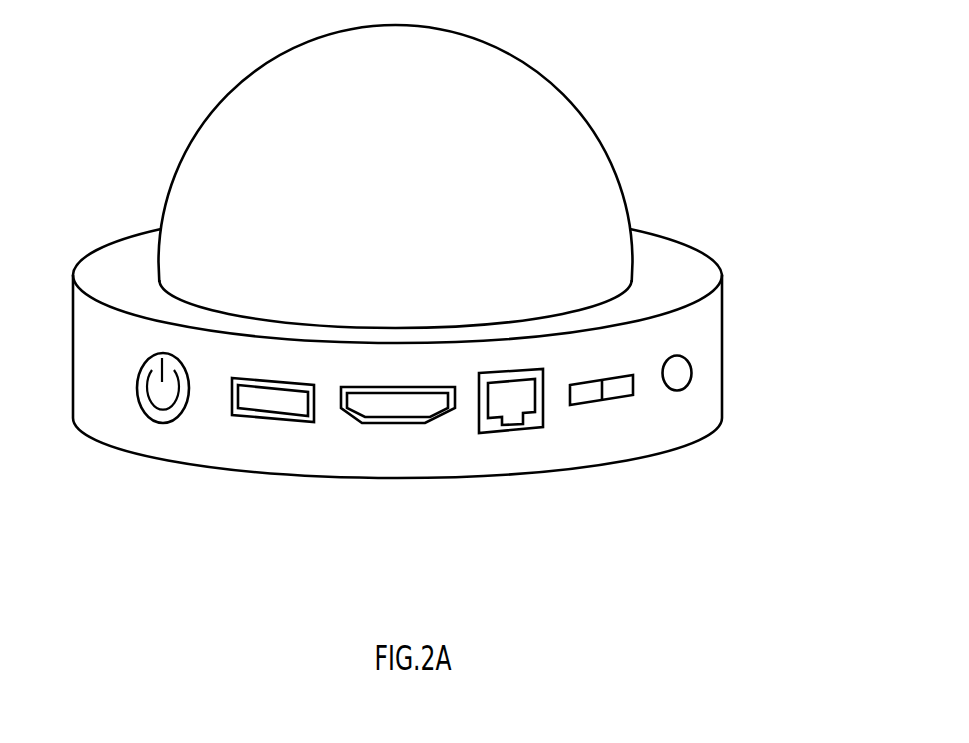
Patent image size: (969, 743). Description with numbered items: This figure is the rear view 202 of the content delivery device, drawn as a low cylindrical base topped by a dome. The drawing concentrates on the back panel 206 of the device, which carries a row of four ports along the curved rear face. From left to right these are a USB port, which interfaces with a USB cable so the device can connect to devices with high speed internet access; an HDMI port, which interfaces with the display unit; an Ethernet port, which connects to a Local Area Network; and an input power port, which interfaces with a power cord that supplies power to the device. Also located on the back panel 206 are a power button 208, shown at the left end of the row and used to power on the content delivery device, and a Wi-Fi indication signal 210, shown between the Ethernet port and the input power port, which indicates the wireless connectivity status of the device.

The rear view 202 is at (660, 58).
The back panel 206 is at (722, 367).
The power button 208 is at (167, 423).
The Wi-Fi indication signal 210 is at (617, 400).